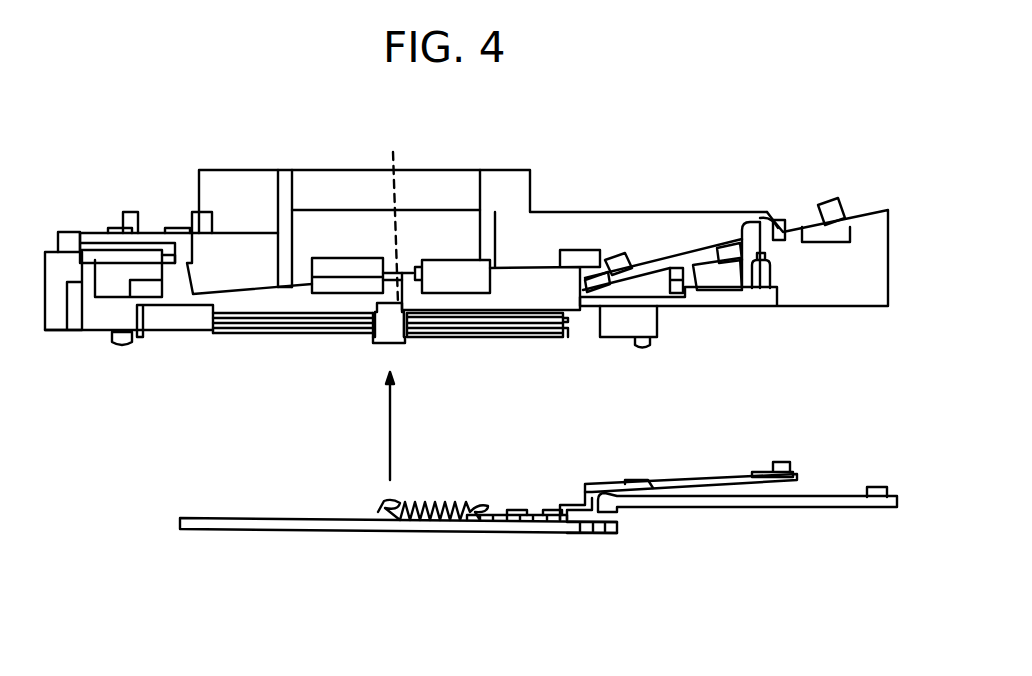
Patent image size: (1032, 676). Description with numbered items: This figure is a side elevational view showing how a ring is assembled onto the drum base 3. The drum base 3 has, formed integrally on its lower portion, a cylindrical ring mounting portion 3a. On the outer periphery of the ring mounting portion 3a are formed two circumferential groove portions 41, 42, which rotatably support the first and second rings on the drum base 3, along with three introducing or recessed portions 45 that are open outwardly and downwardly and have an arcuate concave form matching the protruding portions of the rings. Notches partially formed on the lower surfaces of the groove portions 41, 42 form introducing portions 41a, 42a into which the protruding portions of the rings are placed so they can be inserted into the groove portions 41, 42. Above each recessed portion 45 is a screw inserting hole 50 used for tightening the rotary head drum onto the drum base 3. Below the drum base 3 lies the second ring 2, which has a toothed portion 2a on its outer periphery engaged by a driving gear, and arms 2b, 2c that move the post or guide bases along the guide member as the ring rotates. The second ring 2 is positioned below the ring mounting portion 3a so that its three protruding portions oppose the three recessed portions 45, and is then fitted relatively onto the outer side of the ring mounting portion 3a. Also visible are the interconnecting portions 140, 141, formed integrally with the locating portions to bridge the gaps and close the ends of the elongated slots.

The second ring 2 is at (245, 529).
The toothed portion 2a is at (597, 533).
The arm 2b is at (700, 482).
The arm 2c is at (778, 507).
The drum base 3 is at (547, 223).
The ring mounting portion 3a is at (540, 340).
The groove portion 41 is at (247, 330).
The introducing portion 41a is at (375, 343).
The groove portion 42 is at (498, 338).
The introducing portion 42a is at (397, 343).
The recessed portion 45 is at (382, 343).
The screw inserting hole 50 is at (397, 211).
The interconnecting portion 140 is at (130, 302).
The interconnecting portion 141 is at (633, 298).